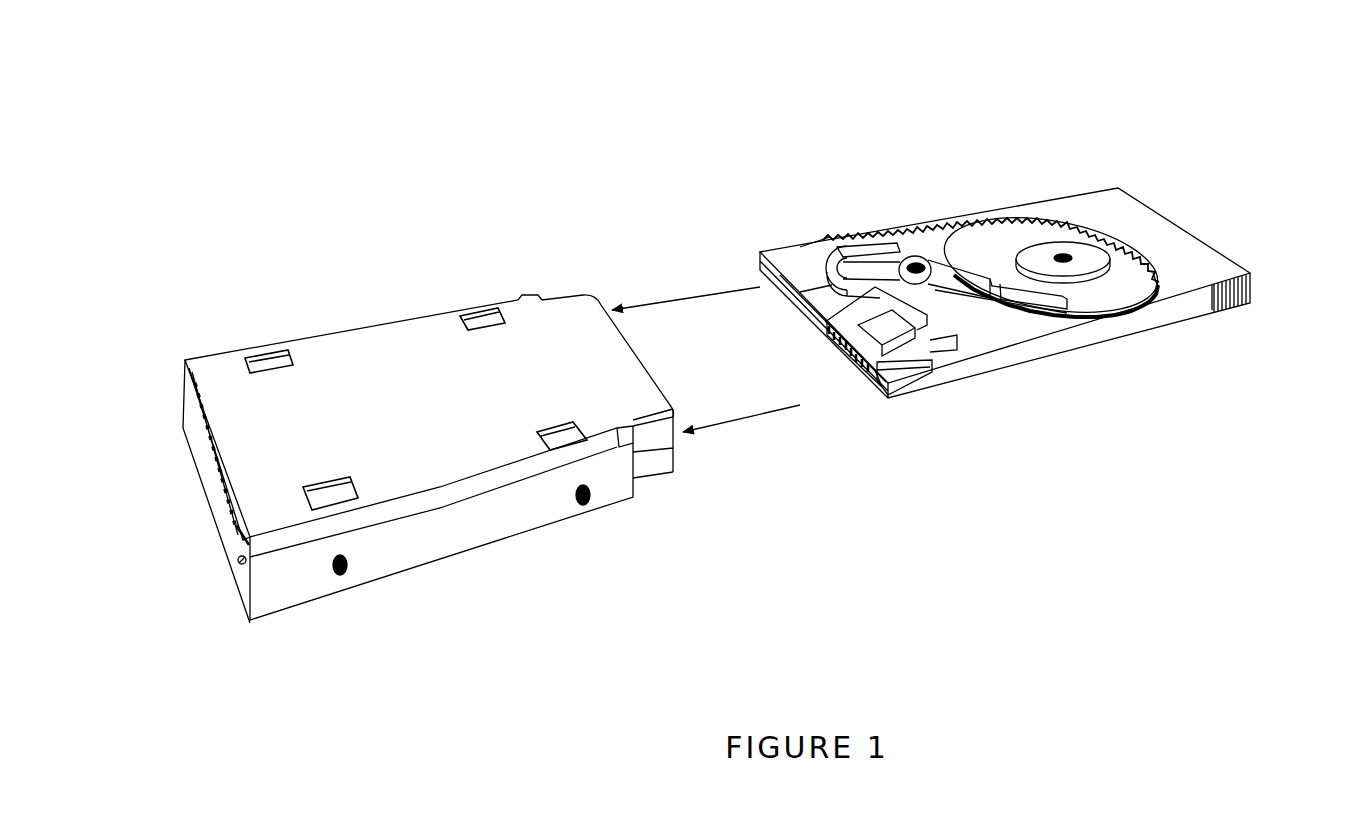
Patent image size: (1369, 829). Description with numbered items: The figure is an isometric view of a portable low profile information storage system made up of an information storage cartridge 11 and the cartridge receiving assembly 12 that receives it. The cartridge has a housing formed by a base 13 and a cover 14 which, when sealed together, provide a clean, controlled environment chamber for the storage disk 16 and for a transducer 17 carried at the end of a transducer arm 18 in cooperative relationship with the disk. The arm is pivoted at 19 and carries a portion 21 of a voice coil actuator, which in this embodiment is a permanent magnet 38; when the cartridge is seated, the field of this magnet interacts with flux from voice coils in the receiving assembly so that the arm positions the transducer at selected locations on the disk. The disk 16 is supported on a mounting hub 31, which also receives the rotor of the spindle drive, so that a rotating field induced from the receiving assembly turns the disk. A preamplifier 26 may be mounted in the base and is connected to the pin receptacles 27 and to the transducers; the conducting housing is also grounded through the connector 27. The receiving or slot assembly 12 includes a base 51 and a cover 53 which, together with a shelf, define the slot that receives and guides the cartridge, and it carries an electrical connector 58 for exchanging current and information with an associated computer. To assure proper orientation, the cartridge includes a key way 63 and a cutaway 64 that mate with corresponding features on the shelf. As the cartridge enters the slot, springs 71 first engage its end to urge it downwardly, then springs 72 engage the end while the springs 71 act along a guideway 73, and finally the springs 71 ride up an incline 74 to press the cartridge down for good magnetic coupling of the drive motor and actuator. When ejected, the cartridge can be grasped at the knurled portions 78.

The information storage cartridge 11 is at (947, 200).
The cartridge receiving assembly 12 is at (402, 290).
The base 13 is at (1180, 307).
The cover 14 is at (1217, 270).
The storage disk 16 is at (1045, 232).
The transducer 17 is at (1060, 310).
The transducer arm 18 is at (1022, 300).
The pivot 19 is at (912, 258).
The portion of voice coil actuator 21 is at (868, 250).
The preamplifier 26 is at (910, 343).
The pin receptacles 27 is at (823, 340).
The mounting hub 31 is at (1090, 250).
The permanent magnet 38 is at (835, 262).
The base 51 is at (457, 542).
The cover 53 is at (273, 443).
The electrical connector 58 is at (190, 400).
The key way 63 is at (763, 262).
The cutaway 64 is at (890, 388).
The springs 71 is at (568, 441).
The springs 72 is at (335, 497).
The guideway 73 is at (1015, 213).
The incline 74 is at (1150, 283).
The knurled portions 78 is at (1237, 303).